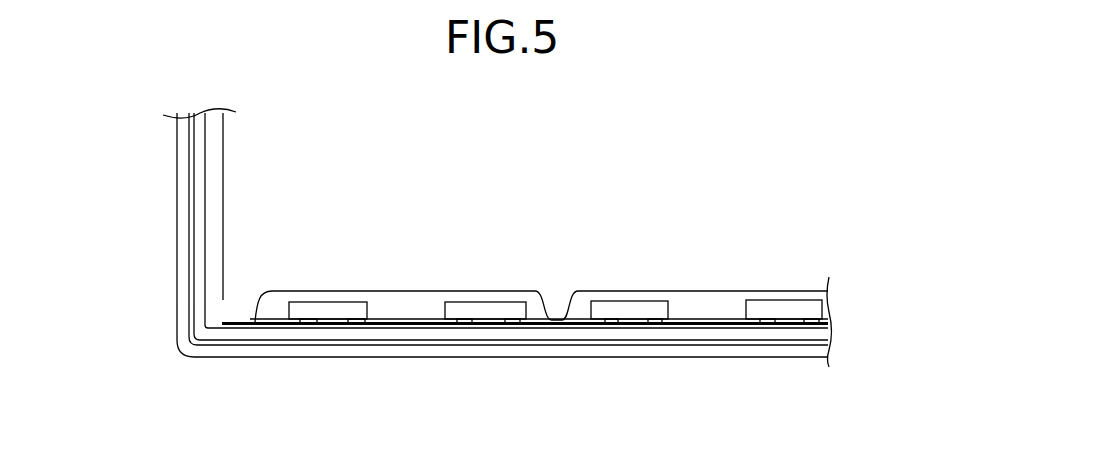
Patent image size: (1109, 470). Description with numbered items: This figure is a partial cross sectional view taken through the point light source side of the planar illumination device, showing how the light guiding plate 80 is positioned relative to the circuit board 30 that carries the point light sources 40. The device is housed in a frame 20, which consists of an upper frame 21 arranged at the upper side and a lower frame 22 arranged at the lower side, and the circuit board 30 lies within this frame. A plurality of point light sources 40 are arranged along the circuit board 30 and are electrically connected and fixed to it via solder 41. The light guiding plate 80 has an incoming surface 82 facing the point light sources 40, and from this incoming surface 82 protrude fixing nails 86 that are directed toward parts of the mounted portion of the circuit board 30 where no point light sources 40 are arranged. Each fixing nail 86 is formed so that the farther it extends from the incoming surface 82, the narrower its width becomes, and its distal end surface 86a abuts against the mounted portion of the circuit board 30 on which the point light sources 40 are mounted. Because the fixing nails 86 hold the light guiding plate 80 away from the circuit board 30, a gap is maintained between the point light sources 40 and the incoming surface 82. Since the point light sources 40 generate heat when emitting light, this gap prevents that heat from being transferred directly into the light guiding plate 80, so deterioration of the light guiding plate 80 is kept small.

The frame 20 is at (502, 376).
The upper frame 21 is at (230, 352).
The lower frame 22 is at (183, 335).
The circuit board 30 is at (417, 328).
The point light source 40 is at (355, 310).
The solder 41 is at (305, 323).
The light guiding plate 80 is at (233, 171).
The incoming surface 82 is at (430, 292).
The fixing nail 86 is at (242, 308).
The distal end surface 86a is at (243, 327).